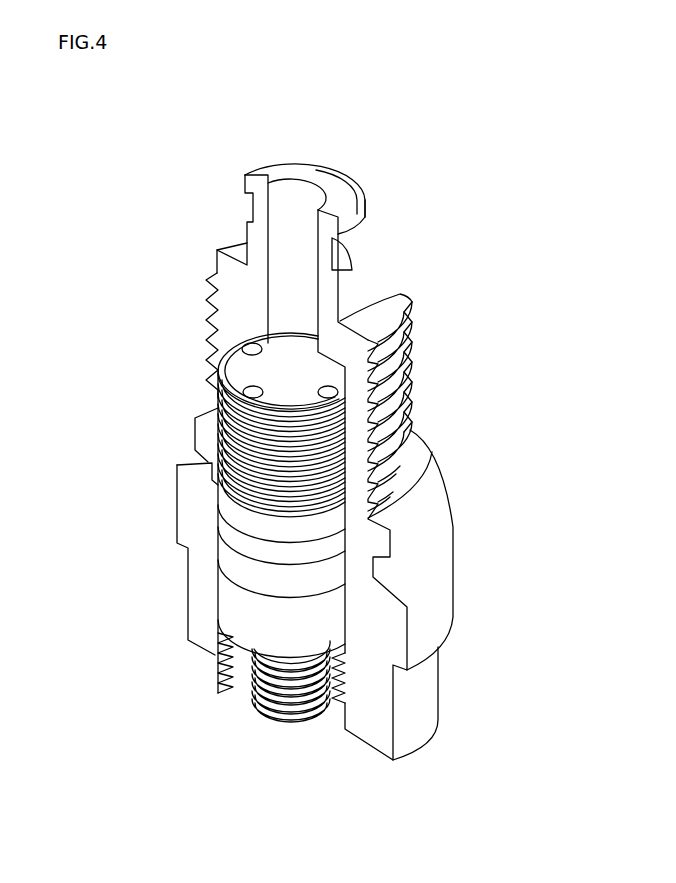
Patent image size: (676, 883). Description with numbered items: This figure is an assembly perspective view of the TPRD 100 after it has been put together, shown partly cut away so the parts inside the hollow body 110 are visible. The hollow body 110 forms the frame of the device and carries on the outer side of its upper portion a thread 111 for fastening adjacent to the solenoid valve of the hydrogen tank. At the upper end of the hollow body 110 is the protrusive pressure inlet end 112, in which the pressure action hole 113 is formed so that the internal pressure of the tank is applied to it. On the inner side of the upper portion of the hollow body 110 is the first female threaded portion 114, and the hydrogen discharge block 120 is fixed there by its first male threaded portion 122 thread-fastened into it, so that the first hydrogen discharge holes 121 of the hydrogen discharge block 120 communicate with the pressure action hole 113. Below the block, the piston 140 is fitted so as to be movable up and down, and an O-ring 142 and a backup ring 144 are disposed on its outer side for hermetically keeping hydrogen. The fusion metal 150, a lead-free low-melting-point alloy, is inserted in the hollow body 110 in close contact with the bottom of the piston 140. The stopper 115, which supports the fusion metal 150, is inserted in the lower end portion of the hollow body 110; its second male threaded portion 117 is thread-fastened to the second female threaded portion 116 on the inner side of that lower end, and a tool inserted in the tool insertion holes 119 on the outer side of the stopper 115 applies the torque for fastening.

The TPRD 100 is at (372, 172).
The hollow body 110 is at (308, 444).
The thread 111 is at (210, 308).
The pressure inlet end 112 is at (257, 202).
The pressure action hole 113 is at (284, 190).
The first female threaded portion 114 is at (353, 447).
The stopper 115 is at (259, 718).
The second female threaded portion 116 is at (331, 698).
The second male threaded portion 117 is at (296, 708).
The tool insertion holes 119 is at (243, 692).
The hydrogen discharge block 120 is at (203, 584).
The first hydrogen discharge holes 121 is at (250, 389).
The first male threaded portion 122 is at (196, 463).
The piston 140 is at (232, 553).
The O-ring 142 is at (225, 508).
The backup ring 144 is at (340, 541).
The fusion metal 150 is at (227, 608).